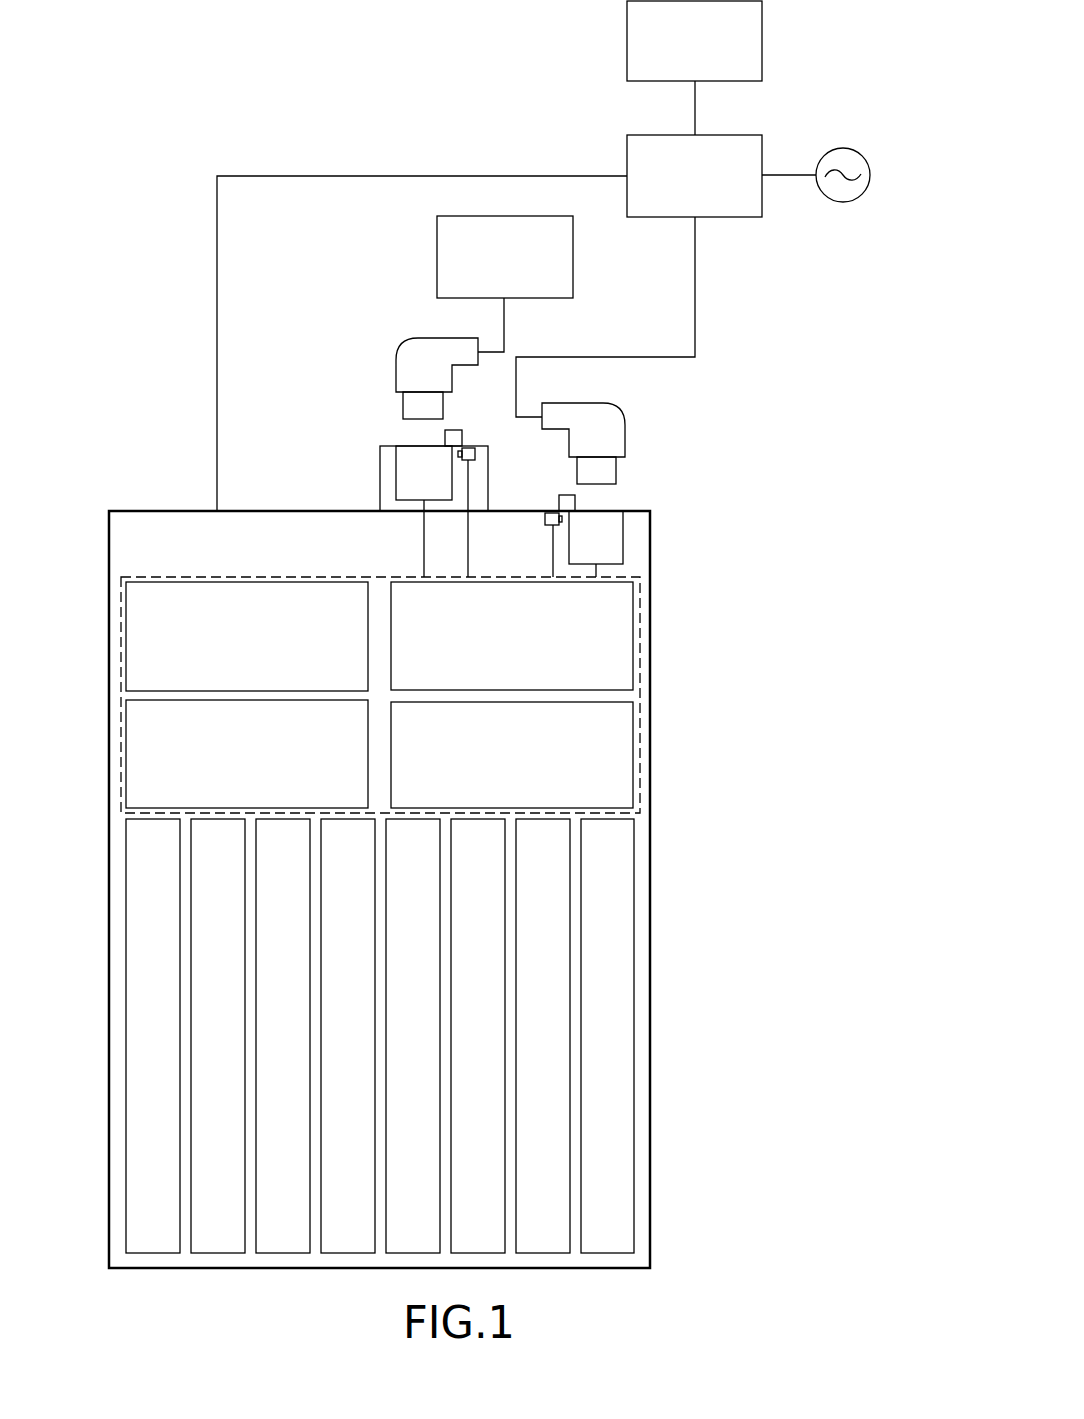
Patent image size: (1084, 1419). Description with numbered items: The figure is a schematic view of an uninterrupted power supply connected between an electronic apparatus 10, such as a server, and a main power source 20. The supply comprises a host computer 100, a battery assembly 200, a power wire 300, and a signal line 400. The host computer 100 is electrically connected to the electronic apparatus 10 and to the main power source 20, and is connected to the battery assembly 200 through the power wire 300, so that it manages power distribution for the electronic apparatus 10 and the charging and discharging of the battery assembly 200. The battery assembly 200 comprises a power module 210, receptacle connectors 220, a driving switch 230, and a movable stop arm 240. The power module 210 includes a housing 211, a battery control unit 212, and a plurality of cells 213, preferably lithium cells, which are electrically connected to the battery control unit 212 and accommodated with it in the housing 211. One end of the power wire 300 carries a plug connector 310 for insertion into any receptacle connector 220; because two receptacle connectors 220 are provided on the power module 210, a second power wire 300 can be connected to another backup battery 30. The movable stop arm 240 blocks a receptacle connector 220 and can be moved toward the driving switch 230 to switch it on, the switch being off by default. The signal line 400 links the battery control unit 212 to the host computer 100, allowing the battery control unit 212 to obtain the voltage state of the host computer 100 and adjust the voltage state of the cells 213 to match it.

The electronic apparatus 10 is at (757, 42).
The main power source 20 is at (843, 202).
The another backup battery 30 is at (566, 257).
The host computer 100 is at (735, 142).
The battery assembly 200 is at (468, 889).
The power module 210 is at (461, 695).
The housing 211 is at (652, 638).
The battery control unit 212 is at (640, 764).
The cell 213 is at (613, 1093).
The receptacle connector 220 is at (607, 536).
The driving switch 230 is at (550, 517).
The movable stop arm 240 is at (568, 500).
The power wire 300 is at (513, 408).
The plug connector 310 is at (405, 370).
The signal line 400 is at (342, 174).